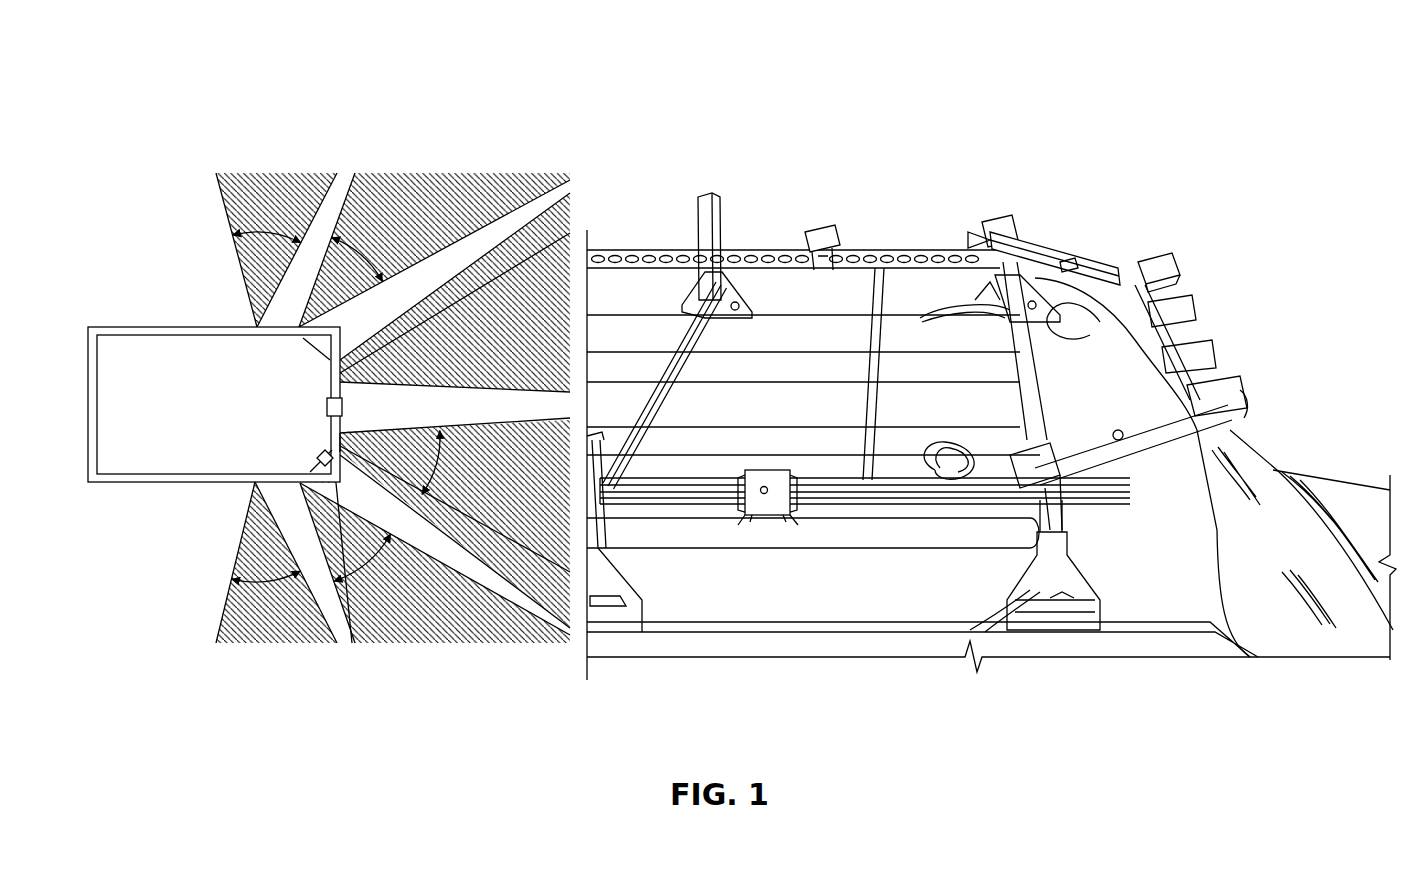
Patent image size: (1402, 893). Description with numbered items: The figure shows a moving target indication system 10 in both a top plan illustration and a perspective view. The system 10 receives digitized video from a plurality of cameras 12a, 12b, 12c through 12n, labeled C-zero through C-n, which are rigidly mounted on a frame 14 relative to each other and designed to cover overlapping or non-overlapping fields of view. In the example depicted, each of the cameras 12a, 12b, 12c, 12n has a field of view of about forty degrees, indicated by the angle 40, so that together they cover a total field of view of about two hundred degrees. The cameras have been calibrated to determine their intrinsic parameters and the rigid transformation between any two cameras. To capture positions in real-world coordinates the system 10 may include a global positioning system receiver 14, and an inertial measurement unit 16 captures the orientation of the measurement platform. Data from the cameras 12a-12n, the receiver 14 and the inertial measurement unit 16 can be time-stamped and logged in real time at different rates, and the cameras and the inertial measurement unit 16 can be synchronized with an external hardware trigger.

The moving target indication system 10 is at (234, 58).
The camera 12a is at (230, 360).
The camera 12b is at (225, 392).
The camera 12c is at (1145, 258).
The camera 12n is at (237, 457).
The frame 14 is at (326, 407).
The inertial measurement unit 16 is at (340, 432).
The field of view angle 40 is at (392, 410).